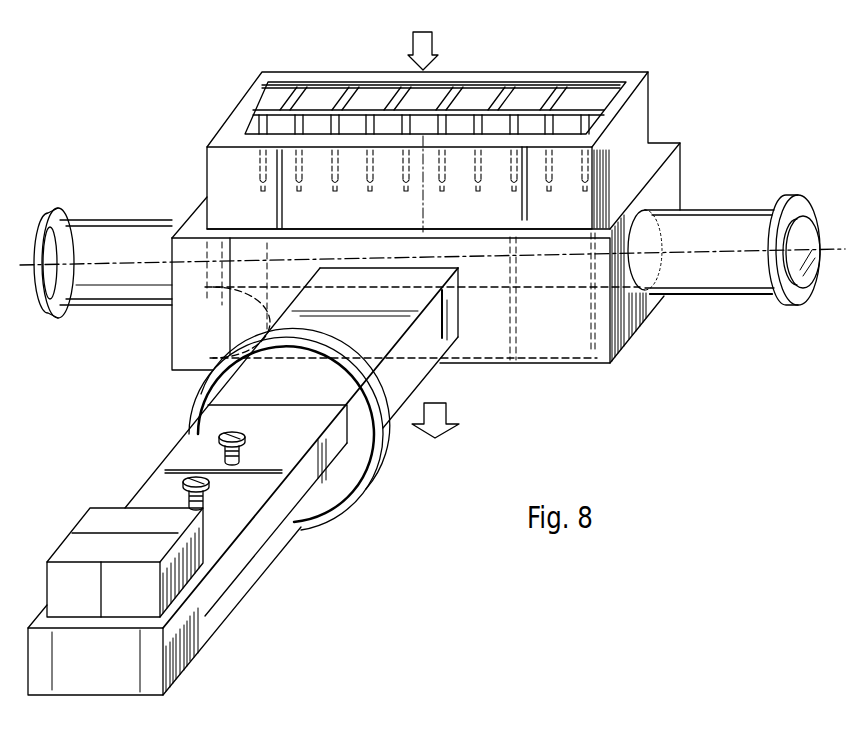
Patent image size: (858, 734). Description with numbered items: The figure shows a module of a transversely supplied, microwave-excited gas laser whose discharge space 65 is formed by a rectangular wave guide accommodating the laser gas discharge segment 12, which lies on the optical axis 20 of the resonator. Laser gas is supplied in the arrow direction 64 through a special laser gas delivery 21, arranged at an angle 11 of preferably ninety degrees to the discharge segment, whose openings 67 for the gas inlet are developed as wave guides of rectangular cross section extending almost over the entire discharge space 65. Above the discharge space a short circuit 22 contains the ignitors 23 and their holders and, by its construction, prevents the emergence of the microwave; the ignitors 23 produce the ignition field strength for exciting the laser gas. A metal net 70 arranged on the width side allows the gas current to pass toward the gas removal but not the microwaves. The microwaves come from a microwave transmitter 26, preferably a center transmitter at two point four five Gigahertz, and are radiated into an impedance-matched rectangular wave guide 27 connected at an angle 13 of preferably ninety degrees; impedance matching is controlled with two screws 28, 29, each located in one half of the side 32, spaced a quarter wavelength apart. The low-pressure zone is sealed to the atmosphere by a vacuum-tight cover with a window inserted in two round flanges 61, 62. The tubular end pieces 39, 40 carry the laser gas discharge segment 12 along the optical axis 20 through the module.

The angle 11 is at (420, 201).
The laser gas discharge segment 12 is at (543, 255).
The angle 13 is at (498, 308).
The optical axis 20 is at (710, 259).
The laser gas delivery 21 is at (633, 127).
The short circuit 22 is at (247, 113).
The ignitor 23 is at (243, 133).
The microwave transmitter 26 is at (185, 567).
The wave guide 27 is at (177, 457).
The screw 28 is at (243, 434).
The screw 29 is at (208, 491).
The side 32 is at (163, 490).
The left flange 39 is at (43, 240).
The right flange 40 is at (808, 226).
The round flange 61 is at (380, 441).
The round flange 62 is at (385, 430).
The arrow direction 64 is at (440, 58).
The discharge space 65 is at (166, 330).
The openings 67 is at (297, 95).
The metal net 70 is at (633, 300).